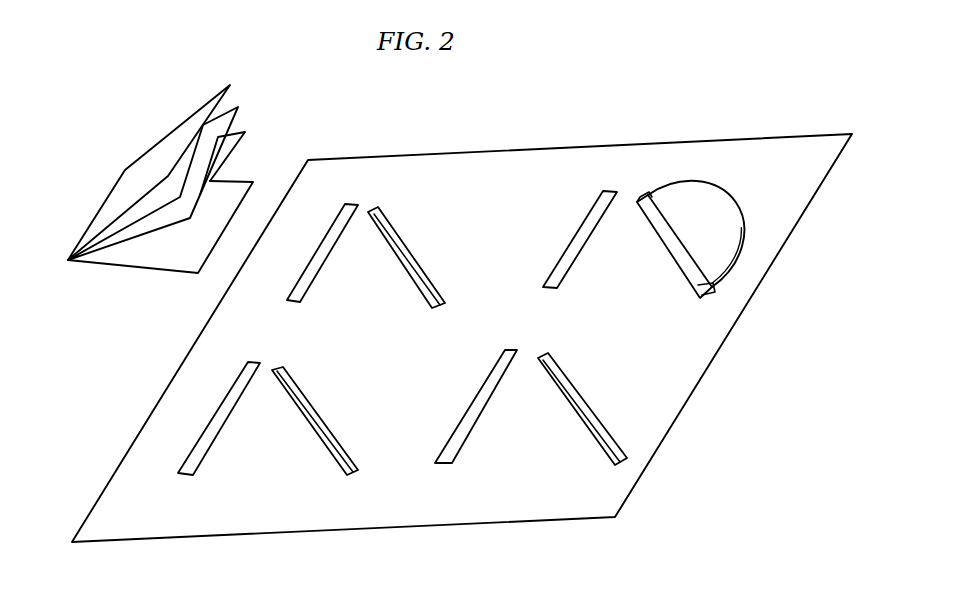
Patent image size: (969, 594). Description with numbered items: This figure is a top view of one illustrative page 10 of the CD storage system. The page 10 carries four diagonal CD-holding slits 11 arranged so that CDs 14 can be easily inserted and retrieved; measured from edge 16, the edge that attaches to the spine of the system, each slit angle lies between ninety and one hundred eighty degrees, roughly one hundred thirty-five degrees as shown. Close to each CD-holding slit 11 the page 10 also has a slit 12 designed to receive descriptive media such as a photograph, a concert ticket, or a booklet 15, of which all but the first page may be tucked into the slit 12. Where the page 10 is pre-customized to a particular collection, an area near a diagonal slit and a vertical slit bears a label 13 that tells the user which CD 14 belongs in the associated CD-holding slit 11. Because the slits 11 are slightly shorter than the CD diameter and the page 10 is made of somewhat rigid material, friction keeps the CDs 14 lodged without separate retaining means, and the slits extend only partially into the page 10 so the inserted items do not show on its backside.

The page 10 is at (462, 338).
The CD-holding slit 11 is at (376, 212).
The slit 12 is at (308, 284).
The label 13 is at (603, 376).
The CD 14 is at (730, 188).
The booklet 15 is at (168, 137).
The edge 16 is at (137, 435).